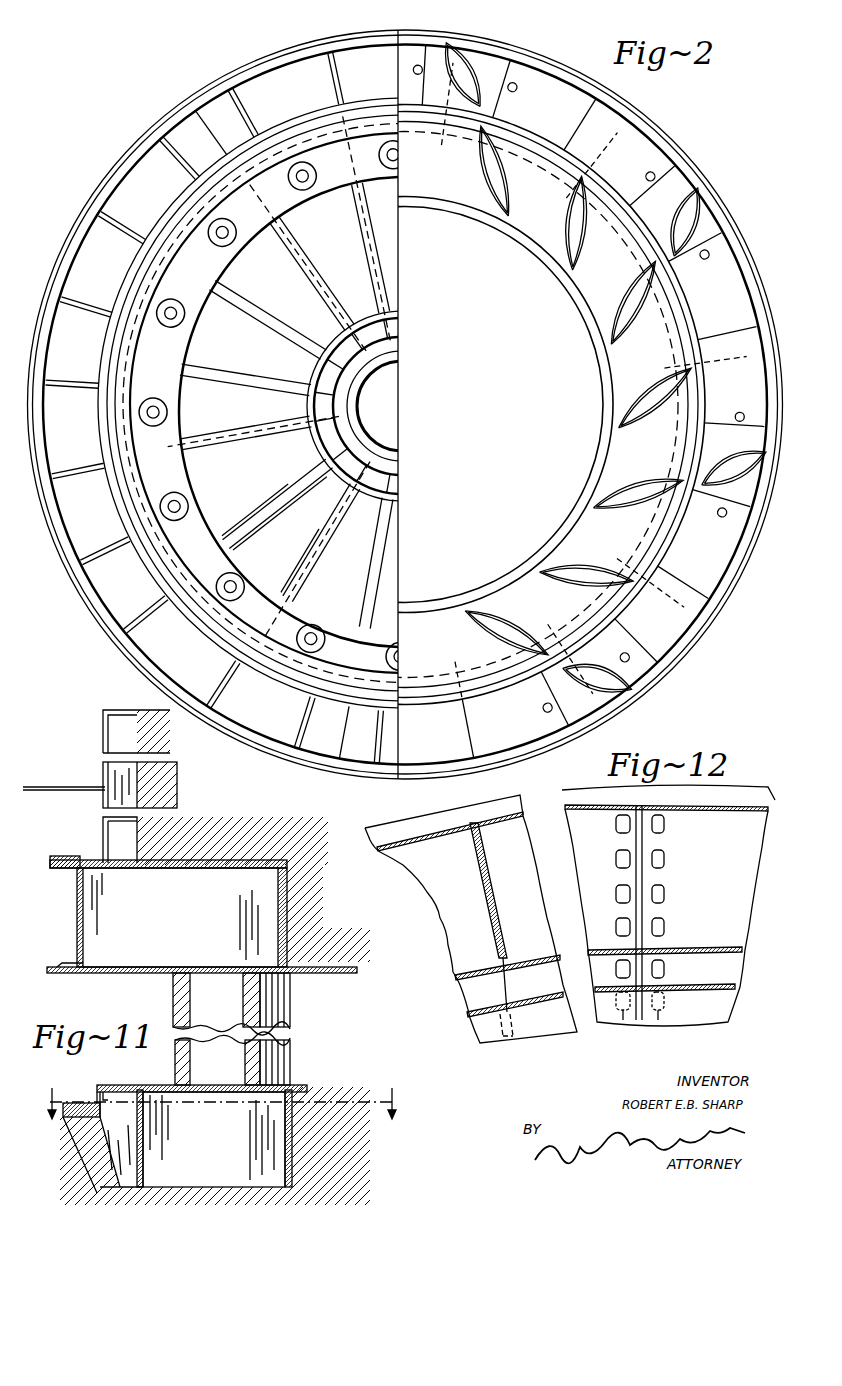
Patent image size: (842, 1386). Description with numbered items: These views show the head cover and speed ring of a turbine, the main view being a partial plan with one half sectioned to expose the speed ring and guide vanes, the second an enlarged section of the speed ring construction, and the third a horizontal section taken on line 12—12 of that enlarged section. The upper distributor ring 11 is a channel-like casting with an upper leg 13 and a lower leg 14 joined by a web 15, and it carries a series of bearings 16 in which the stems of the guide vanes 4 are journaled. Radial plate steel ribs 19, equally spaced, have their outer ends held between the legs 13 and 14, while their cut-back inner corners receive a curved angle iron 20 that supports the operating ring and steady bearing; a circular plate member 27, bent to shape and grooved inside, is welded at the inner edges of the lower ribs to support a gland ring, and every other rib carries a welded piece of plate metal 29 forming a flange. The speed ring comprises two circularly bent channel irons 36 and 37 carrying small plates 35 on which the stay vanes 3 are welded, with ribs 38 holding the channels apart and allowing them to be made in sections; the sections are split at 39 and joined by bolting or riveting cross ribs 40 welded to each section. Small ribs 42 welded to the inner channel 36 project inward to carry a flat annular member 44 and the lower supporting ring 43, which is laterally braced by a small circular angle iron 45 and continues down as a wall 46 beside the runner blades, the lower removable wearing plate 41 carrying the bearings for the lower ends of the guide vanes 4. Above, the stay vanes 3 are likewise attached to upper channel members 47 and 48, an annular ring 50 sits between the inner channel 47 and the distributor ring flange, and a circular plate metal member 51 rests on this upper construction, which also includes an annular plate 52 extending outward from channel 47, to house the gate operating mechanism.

In FIG. 2, the stay vanes 3 is at (611, 369).
In FIG. 11, the stay vanes 3 is at (290, 1002).
In FIG. 2, the guide vanes 4 is at (579, 393).
In FIG. 2, the upper distributor ring 11 is at (213, 557).
In FIG. 11, the section line 12- 12 is at (223, 1116).
In FIG. 2, the upper leg 13 is at (257, 577).
In FIG. 2, the lower leg 14 is at (187, 533).
In FIG. 2, the web 15 is at (372, 625).
In FIG. 2, the bearings 16 is at (167, 411).
In FIG. 2, the radial plate steel ribs 19 is at (225, 374).
In FIG. 2, the angle iron 20 is at (334, 473).
In FIG. 2, the circular plate member 27 is at (368, 431).
In FIG. 2, the plate metal flange piece 29 is at (362, 258).
In FIG. 2, the small plates 35 is at (578, 389).
In FIG. 11, the small plates 35 is at (143, 974).
In FIG. 2, the inner channel iron 36 is at (426, 405).
In FIG. 11, the inner channel iron 36 is at (143, 1171).
In FIG. 12, the inner channel iron 36 is at (467, 981).
In FIG. 2, the outer channel iron 37 is at (748, 548).
In FIG. 11, the outer channel iron 37 is at (283, 1104).
In FIG. 12, the outer channel iron 37 is at (400, 830).
In FIG. 2, the ribs 38 is at (610, 401).
In FIG. 11, the ribs 38 is at (184, 1027).
In FIG. 12, the ribs 38 is at (492, 905).
In FIG. 12, the split 39 is at (645, 881).
In FIG. 12, the cross ribs 40 is at (636, 839).
In FIG. 2, the lower removable wearing plate 41 is at (407, 405).
In FIG. 2, the small ribs 42 is at (405, 405).
In FIG. 11, the small ribs 42 is at (95, 1100).
In FIG. 12, the small ribs 42 is at (503, 988).
In FIG. 2, the lower supporting ring 43 is at (406, 405).
In FIG. 2, the flat annular member 44 is at (421, 405).
In FIG. 11, the flat annular member 44 is at (70, 1103).
In FIG. 12, the flat annular member 44 is at (618, 1010).
In FIG. 2, the circular angle iron 45 is at (593, 381).
In FIG. 11, the circular angle iron 45 is at (103, 1090).
In FIG. 12, the circular angle iron 45 is at (540, 997).
In FIG. 2, the wall 46 is at (405, 405).
In FIG. 11, the inner upper channel member 47 is at (78, 921).
In FIG. 2, the outer upper channel member 48 is at (267, 640).
In FIG. 11, the outer upper channel member 48 is at (277, 881).
In FIG. 11, the annular ring 50 is at (52, 856).
In FIG. 2, the circular plate metal member 51 is at (291, 682).
In FIG. 11, the circular plate metal member 51 is at (103, 740).
In FIG. 11, the annular plate 52 is at (96, 862).